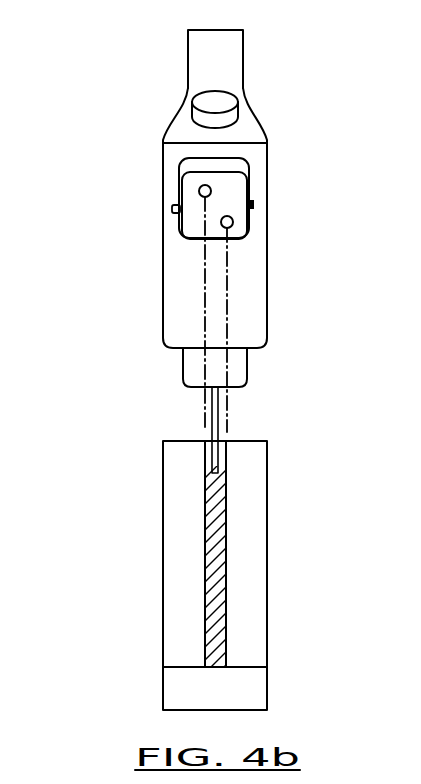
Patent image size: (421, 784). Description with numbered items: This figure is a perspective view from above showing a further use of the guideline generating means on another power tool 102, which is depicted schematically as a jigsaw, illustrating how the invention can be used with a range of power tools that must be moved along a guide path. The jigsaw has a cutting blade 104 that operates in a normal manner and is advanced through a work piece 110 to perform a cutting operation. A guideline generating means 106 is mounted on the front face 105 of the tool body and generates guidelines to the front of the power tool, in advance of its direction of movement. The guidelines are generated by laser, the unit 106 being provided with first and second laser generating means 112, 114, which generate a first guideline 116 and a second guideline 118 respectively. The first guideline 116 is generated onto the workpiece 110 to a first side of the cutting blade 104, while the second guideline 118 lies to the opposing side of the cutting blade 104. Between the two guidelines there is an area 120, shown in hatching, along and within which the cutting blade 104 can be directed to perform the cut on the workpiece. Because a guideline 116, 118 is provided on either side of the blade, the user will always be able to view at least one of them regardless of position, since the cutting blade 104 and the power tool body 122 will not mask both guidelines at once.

The power tool 102 is at (258, 150).
The cutting blade 104 is at (218, 420).
The front face 105 is at (257, 328).
The guideline generating means 106 is at (243, 217).
The work piece 110 is at (267, 612).
The first laser generating means 112 is at (201, 196).
The second laser generating means 114 is at (229, 215).
The first guideline 116 is at (203, 530).
The second guideline 118 is at (226, 530).
The area 120 is at (222, 479).
The power tool body 122 is at (243, 69).